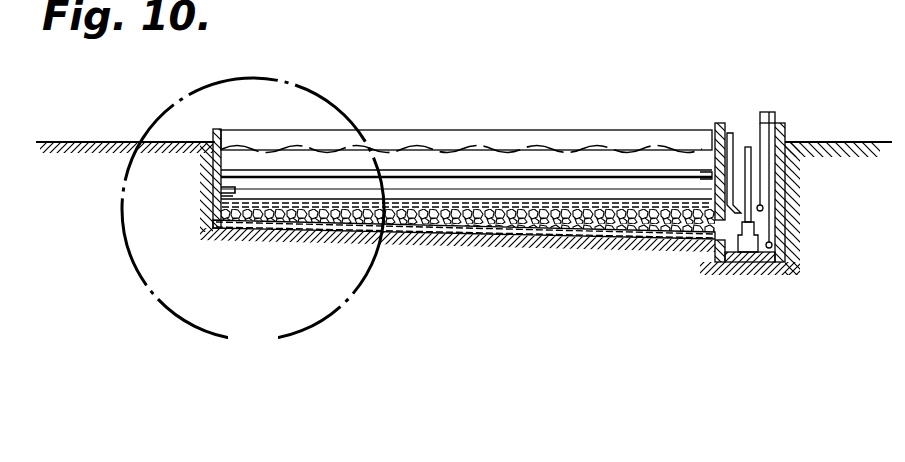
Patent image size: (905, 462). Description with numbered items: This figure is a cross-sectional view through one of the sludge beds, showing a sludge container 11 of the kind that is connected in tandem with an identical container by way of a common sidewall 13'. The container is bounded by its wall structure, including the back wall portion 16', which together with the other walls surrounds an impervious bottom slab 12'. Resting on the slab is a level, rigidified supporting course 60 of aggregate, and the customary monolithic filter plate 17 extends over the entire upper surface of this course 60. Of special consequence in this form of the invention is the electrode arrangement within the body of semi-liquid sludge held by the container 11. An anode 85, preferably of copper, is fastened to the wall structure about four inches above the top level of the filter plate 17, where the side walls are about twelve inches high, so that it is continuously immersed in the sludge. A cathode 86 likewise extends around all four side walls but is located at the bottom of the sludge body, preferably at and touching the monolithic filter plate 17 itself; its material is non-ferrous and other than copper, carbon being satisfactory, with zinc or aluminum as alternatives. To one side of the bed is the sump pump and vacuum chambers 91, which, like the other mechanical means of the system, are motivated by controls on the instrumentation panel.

The sludge container 11 is at (253, 217).
The impervious bottom slab 12' is at (464, 260).
The common sidewall 13' is at (466, 121).
The back wall portion 16' is at (182, 137).
The monolithic filter plate 17 is at (641, 203).
The supporting course of aggregate 60 is at (468, 218).
The anode 85 is at (398, 172).
The cathode 86 is at (214, 192).
The sump pump and vacuum chambers 91 is at (777, 227).